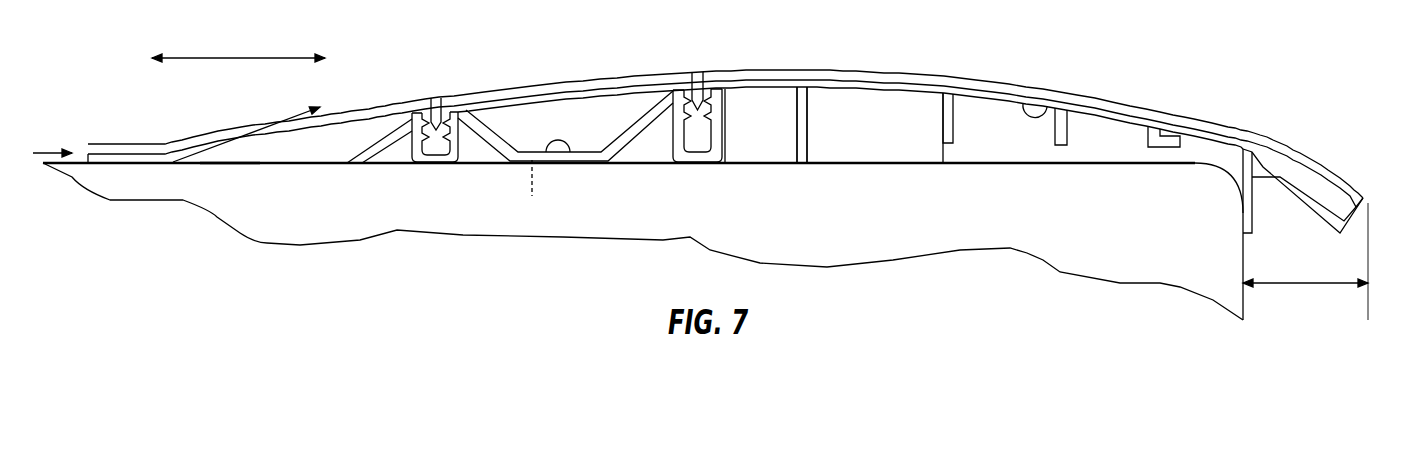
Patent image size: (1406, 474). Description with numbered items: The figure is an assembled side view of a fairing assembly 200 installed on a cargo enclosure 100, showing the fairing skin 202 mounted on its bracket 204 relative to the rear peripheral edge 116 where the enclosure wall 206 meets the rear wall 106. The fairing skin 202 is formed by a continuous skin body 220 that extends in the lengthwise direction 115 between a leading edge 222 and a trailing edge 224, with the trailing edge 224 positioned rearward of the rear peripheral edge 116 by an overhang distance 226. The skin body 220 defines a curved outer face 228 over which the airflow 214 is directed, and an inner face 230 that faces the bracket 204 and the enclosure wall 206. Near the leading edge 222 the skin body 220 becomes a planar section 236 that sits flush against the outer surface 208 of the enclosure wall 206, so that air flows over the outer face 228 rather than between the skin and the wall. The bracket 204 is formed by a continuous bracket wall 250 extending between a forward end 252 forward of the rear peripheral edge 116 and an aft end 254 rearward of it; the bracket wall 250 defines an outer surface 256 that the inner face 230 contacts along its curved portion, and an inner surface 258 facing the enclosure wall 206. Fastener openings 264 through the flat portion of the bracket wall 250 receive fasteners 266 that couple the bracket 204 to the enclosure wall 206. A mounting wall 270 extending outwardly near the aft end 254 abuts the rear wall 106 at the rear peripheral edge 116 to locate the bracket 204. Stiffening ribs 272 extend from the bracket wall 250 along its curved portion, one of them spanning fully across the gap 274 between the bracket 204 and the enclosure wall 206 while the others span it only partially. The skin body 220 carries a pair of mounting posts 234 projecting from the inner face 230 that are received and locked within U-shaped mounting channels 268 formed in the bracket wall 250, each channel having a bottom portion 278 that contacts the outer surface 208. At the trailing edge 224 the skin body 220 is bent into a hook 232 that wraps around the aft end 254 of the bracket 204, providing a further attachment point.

The cargo enclosure 100 is at (378, 214).
The rear wall 106 is at (1245, 297).
The lengthwise direction 115 is at (247, 57).
The rear peripheral edge 116 is at (1228, 168).
The fairing assembly 200 is at (1292, 132).
The fairing skin 202 is at (725, 107).
The bracket 204 is at (875, 125).
The enclosure wall 206 is at (230, 167).
The outer surface 208 is at (318, 156).
The airflow 214 is at (48, 150).
The skin body 220 is at (1010, 78).
The leading edge 222 is at (83, 165).
The trailing edge 224 is at (1368, 197).
The overhang distance 226 is at (1303, 280).
The outer face 228 is at (935, 73).
The inner face 230 is at (1035, 97).
The hook 232 is at (1298, 200).
The mounting posts 234 is at (438, 112).
The planar section 236 is at (587, 159).
The bracket wall 250 is at (845, 108).
The forward end 252 is at (343, 168).
The aft end 254 is at (1343, 198).
The outer surface 256 is at (1130, 108).
The inner surface 258 is at (977, 100).
The fastener openings 264 is at (533, 192).
The fasteners 266 is at (560, 143).
The mounting channels 268 is at (437, 146).
The mounting wall 270 is at (1243, 200).
The stiffening ribs 272 is at (806, 155).
The gap 274 is at (778, 143).
The bottom portion 278 is at (423, 158).